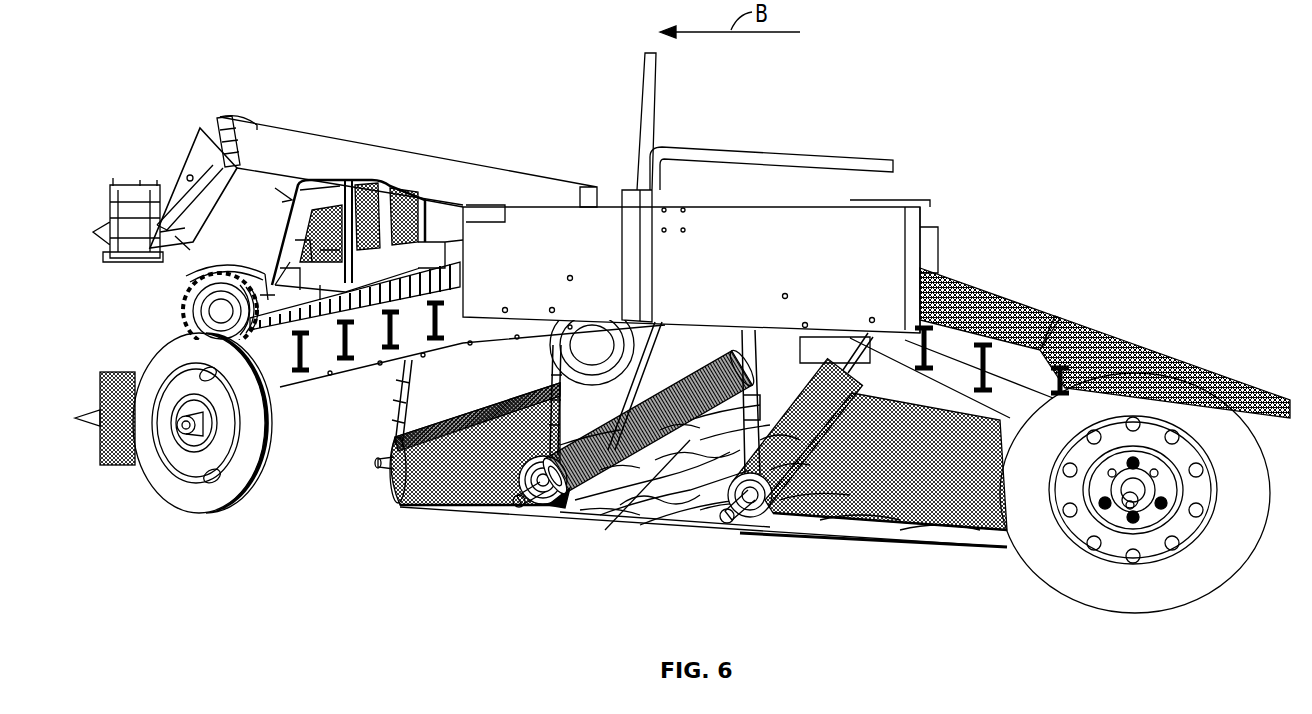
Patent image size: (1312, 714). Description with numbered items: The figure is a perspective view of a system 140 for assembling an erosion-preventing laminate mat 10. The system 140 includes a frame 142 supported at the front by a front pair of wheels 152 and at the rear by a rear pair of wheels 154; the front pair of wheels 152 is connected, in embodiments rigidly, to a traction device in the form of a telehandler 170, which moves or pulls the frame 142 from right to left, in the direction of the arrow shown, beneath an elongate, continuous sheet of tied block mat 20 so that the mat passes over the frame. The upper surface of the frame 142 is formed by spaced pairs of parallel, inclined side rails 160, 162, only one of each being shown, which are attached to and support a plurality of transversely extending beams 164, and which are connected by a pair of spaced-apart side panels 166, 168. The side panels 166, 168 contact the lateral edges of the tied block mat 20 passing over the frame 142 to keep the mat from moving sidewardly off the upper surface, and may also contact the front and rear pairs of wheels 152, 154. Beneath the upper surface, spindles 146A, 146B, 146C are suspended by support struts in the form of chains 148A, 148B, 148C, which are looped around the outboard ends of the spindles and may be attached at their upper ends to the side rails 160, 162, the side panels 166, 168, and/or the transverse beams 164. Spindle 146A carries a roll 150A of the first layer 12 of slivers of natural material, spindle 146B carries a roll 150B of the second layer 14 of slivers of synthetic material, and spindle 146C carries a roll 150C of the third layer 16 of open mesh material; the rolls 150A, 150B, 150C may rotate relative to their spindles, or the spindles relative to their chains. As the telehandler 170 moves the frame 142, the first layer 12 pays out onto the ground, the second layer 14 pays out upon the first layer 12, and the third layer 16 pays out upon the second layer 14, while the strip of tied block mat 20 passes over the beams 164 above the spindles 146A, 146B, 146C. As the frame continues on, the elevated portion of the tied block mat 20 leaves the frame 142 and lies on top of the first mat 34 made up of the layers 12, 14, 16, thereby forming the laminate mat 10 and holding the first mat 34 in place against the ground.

The laminate mat 10 is at (948, 555).
The first layer 12 is at (437, 502).
The second layer 14 is at (692, 512).
The third layer 16 is at (848, 546).
The tied block mat 20 is at (1143, 340).
The first mat 34 is at (990, 548).
The system 140 is at (738, 206).
The frame 142 is at (904, 222).
The spindle 146A is at (378, 468).
The spindle 146B is at (508, 503).
The spindle 146C is at (724, 518).
The support strut 148A is at (380, 418).
The support strut 148B is at (507, 408).
The support strut 148C is at (580, 505).
The roll 150A is at (640, 362).
The roll 150B is at (746, 342).
The roll 150C is at (822, 352).
The front pair of wheels 152 is at (168, 495).
The rear pair of wheels 154 is at (1180, 598).
The inclined side rail 160 is at (455, 302).
The inclined side rail 162 is at (988, 296).
The transversely extending beams 164 is at (390, 306).
The side panel 166 is at (762, 218).
The side panel 168 is at (936, 240).
The telehandler 170 is at (327, 127).